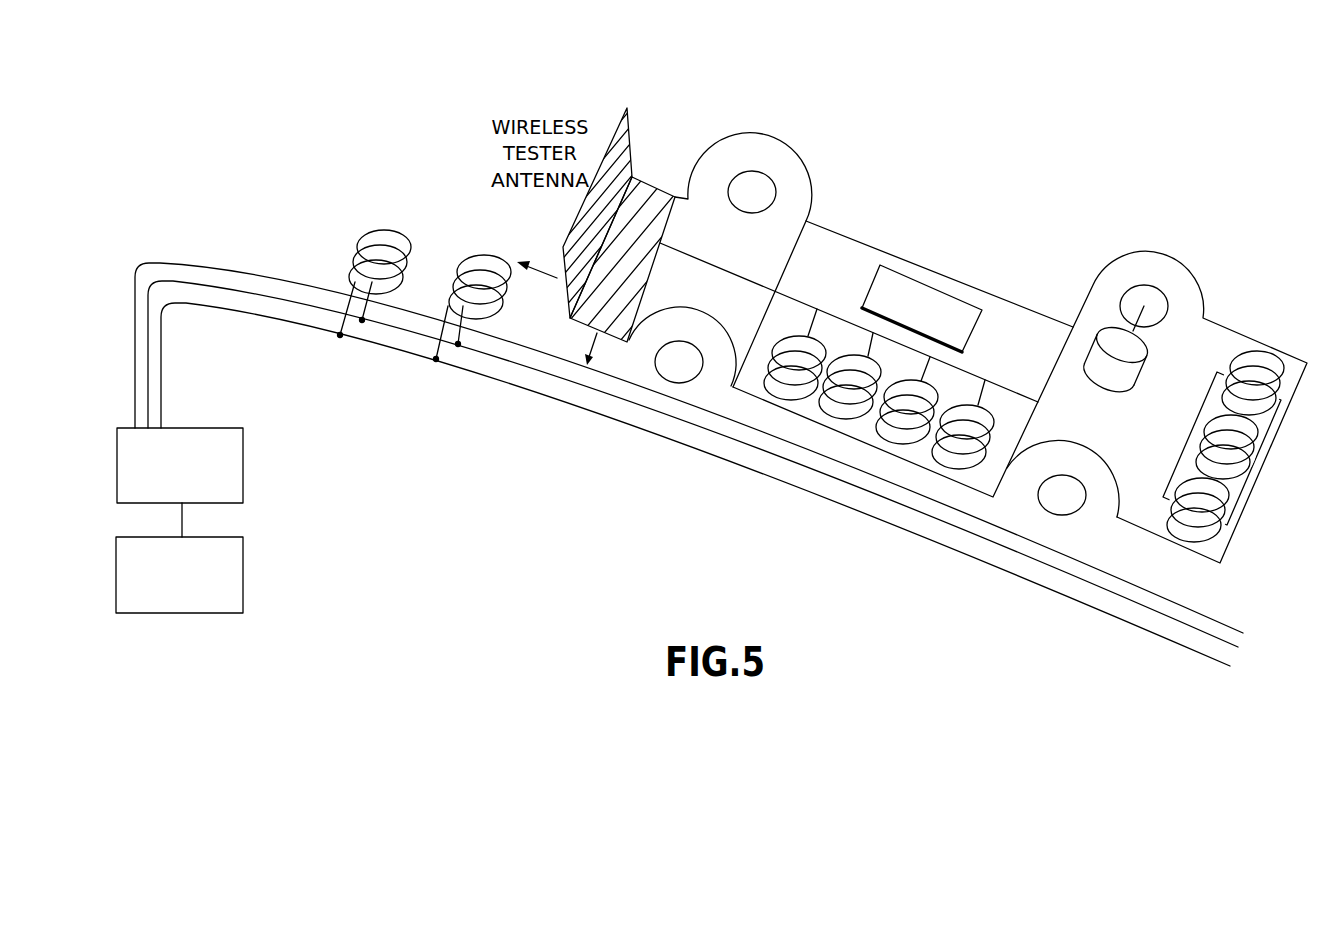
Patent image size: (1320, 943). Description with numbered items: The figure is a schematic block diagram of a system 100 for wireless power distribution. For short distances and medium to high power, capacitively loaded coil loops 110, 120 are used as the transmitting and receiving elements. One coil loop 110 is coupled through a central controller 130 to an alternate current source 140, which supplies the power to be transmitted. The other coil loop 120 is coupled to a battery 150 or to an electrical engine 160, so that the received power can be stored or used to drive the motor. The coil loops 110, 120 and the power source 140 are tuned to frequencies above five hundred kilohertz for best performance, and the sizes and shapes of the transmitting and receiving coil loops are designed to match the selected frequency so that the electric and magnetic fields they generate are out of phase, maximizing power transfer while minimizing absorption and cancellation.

The wireless power transfer system 100 is at (316, 58).
The capacitively loaded coil loop 110 is at (373, 232).
The coil loop 120 is at (827, 410).
The central controller 130 is at (243, 478).
The alternate current source 140 is at (243, 590).
The battery 150 is at (903, 270).
The electrical engine 160 is at (1110, 346).